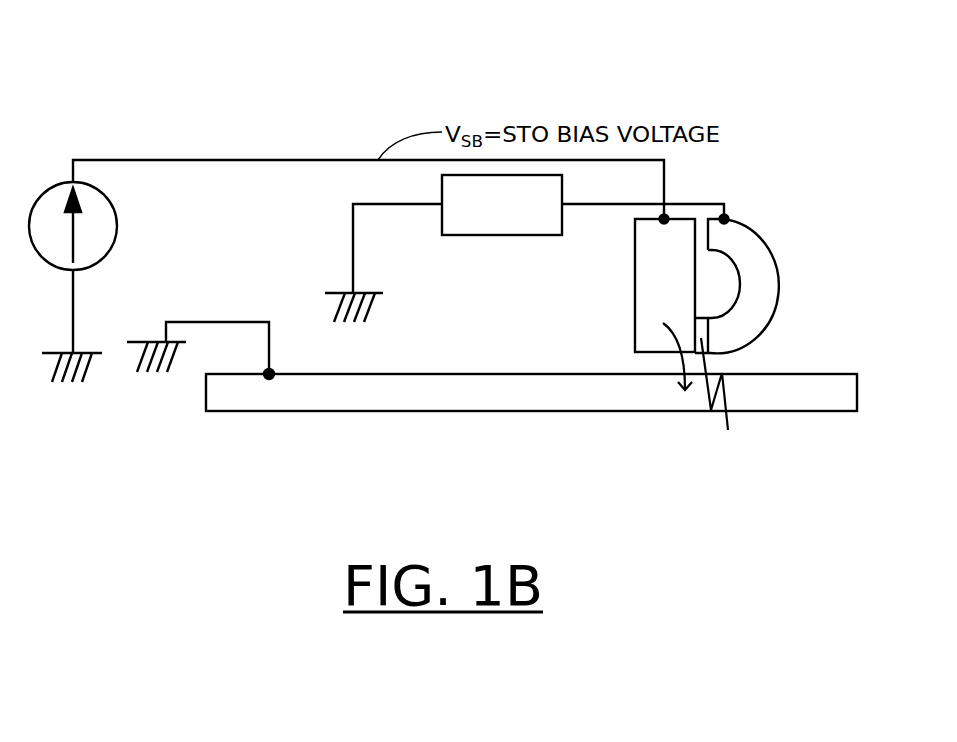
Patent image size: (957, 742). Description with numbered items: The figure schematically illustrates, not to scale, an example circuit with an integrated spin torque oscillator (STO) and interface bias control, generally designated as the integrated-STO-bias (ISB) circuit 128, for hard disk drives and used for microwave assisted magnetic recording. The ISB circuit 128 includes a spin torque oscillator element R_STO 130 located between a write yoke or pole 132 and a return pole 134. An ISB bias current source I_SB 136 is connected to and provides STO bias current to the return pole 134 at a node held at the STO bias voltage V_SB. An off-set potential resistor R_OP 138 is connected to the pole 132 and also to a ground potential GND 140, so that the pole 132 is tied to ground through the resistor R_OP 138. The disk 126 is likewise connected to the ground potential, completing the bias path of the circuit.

The disk 126 is at (550, 403).
The integrated-STO-bias (ISB) circuit 128 is at (433, 40).
The spin torque oscillator (STO) element R_STO 130 is at (710, 404).
The write yoke or pole 132 is at (781, 264).
The return pole 134 is at (645, 248).
The ISB bias current source I_SB 136 is at (104, 259).
The off-set potential resistor R_OP 138 is at (502, 205).
The ground potential GND 140 is at (353, 269).